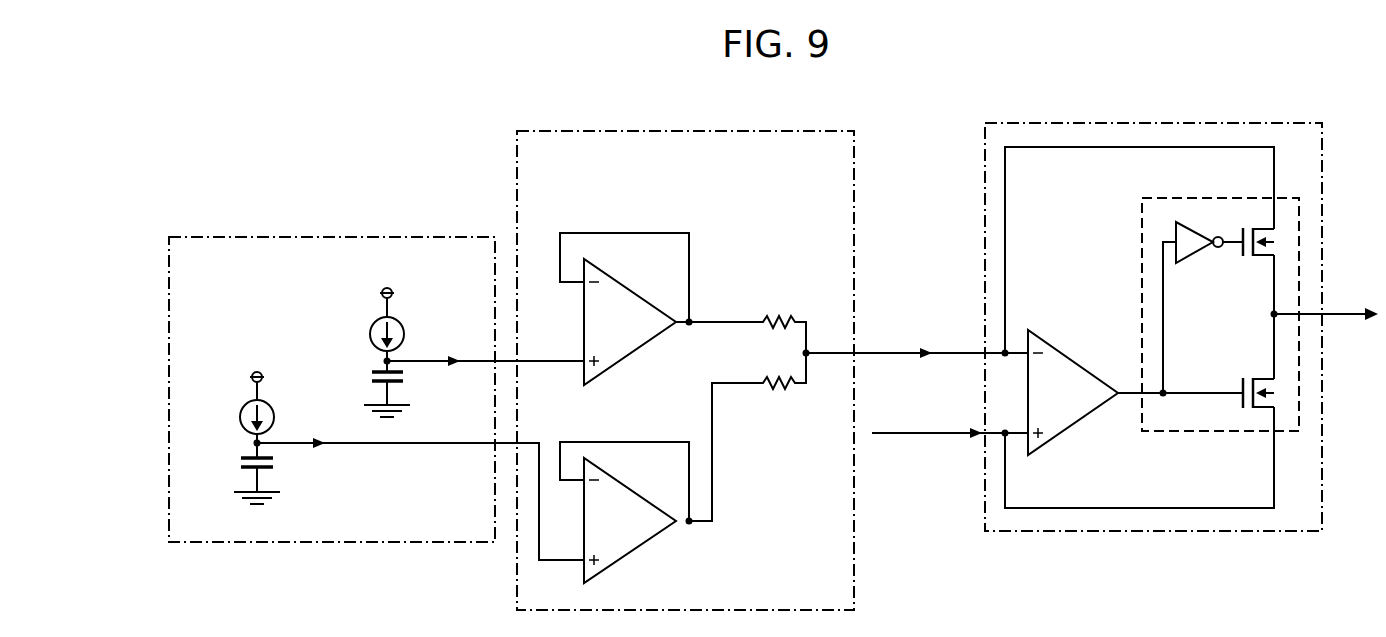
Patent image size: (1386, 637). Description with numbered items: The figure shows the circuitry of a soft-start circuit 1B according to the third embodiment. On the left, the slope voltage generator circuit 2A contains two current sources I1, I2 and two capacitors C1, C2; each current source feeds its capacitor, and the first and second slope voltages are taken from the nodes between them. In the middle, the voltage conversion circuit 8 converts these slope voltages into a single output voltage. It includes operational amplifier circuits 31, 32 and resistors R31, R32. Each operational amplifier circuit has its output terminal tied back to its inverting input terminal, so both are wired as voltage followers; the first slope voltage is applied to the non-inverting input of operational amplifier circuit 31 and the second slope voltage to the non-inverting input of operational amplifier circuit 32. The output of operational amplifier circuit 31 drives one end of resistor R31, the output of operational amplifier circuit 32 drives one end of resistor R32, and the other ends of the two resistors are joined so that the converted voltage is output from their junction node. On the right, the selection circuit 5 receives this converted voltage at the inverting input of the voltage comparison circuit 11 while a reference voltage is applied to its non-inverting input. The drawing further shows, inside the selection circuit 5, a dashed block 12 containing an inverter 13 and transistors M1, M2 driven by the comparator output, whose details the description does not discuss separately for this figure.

The soft-start circuit 1B is at (927, 96).
The slope voltage generator circuit 2A is at (347, 229).
The voltage conversion circuit 8 is at (744, 117).
The selection circuit 5 is at (1238, 112).
The voltage comparison circuit 11 is at (1061, 342).
The output stage 12 is at (1212, 439).
The inverter 13 is at (1197, 258).
The operational amplifier circuit 31 is at (622, 364).
The operational amplifier circuit 32 is at (622, 562).
The resistor R31 is at (741, 317).
The resistor R32 is at (747, 437).
The capacitor C1 is at (398, 392).
The capacitor C2 is at (269, 479).
The current source I1 is at (370, 338).
The current source I2 is at (239, 417).
The first transistor M1 is at (1252, 256).
The second transistor M2 is at (1252, 378).